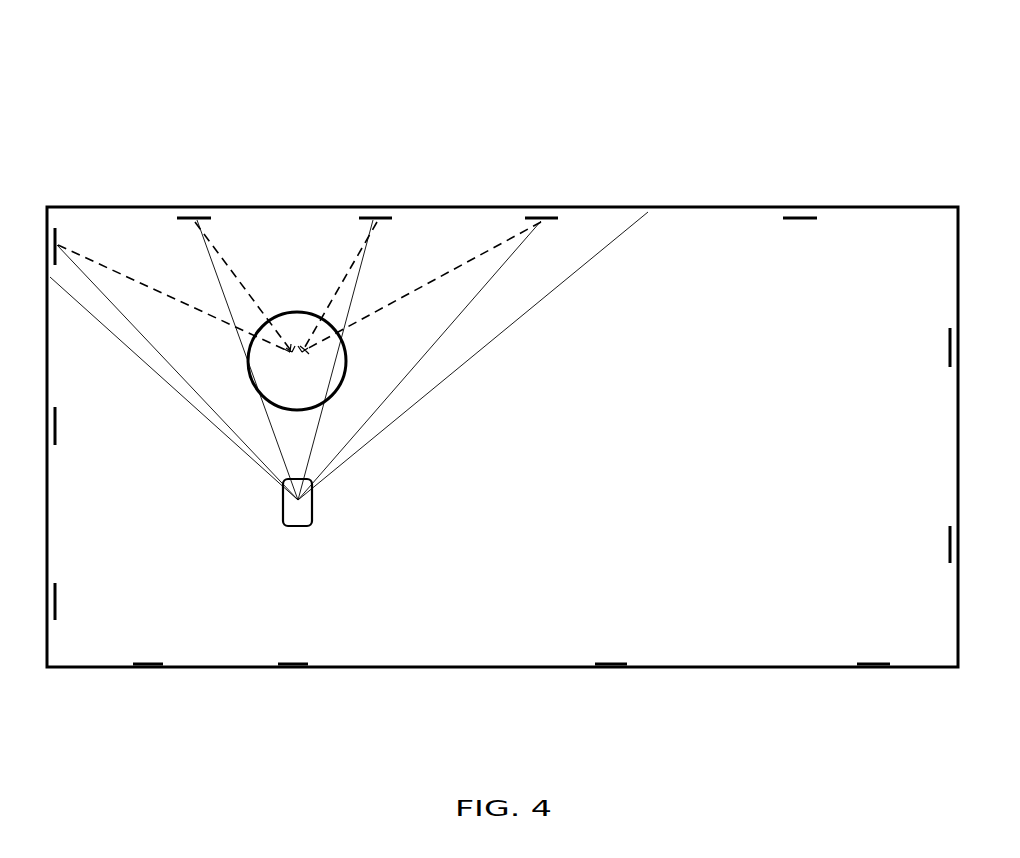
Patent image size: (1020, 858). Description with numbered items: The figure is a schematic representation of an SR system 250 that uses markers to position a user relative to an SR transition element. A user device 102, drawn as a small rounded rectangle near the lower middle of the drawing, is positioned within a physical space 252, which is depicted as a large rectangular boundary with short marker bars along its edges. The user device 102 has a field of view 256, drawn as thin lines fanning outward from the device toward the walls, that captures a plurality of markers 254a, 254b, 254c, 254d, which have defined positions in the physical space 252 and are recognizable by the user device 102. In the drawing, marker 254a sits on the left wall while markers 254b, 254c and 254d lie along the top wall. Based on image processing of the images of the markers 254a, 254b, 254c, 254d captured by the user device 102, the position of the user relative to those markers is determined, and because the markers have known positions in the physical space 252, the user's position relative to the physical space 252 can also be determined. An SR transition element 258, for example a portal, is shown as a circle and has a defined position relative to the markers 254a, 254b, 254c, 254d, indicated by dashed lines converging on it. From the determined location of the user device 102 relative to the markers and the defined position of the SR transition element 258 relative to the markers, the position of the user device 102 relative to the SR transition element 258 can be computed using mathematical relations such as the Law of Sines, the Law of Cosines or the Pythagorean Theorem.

The SR system 250 is at (858, 105).
The physical space 252 is at (738, 207).
The marker 254a is at (57, 243).
The marker 254b is at (210, 210).
The marker 254c is at (385, 214).
The marker 254d is at (543, 214).
The field of view 256 is at (500, 333).
The SR transition element 258 is at (316, 387).
The user device 102 is at (303, 510).